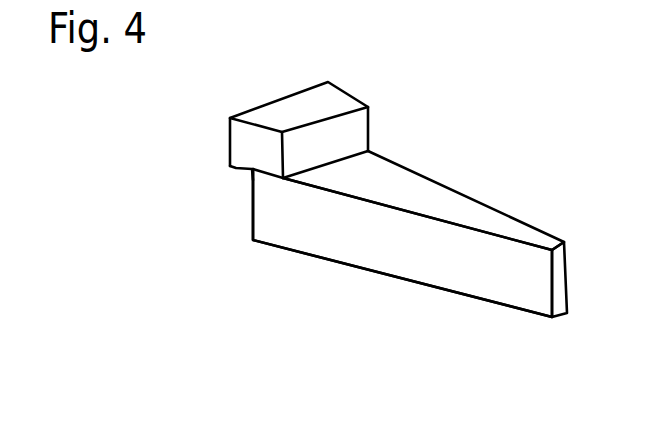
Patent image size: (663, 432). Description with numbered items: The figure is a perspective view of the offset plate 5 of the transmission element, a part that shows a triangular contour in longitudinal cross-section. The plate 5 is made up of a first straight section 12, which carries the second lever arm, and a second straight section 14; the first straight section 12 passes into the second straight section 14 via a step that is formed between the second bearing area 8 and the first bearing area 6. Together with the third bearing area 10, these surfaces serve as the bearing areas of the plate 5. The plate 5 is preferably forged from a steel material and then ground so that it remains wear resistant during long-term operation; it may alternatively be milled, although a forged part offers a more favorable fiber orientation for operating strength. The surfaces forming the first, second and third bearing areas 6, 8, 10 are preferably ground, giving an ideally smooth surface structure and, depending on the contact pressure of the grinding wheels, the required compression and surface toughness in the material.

The offset plate 5 is at (248, 231).
The first bearing area 6 is at (247, 176).
The second bearing area 8 is at (348, 167).
The third bearing area 10 is at (546, 323).
The first straight section 12 is at (398, 267).
The second straight section 14 is at (242, 147).